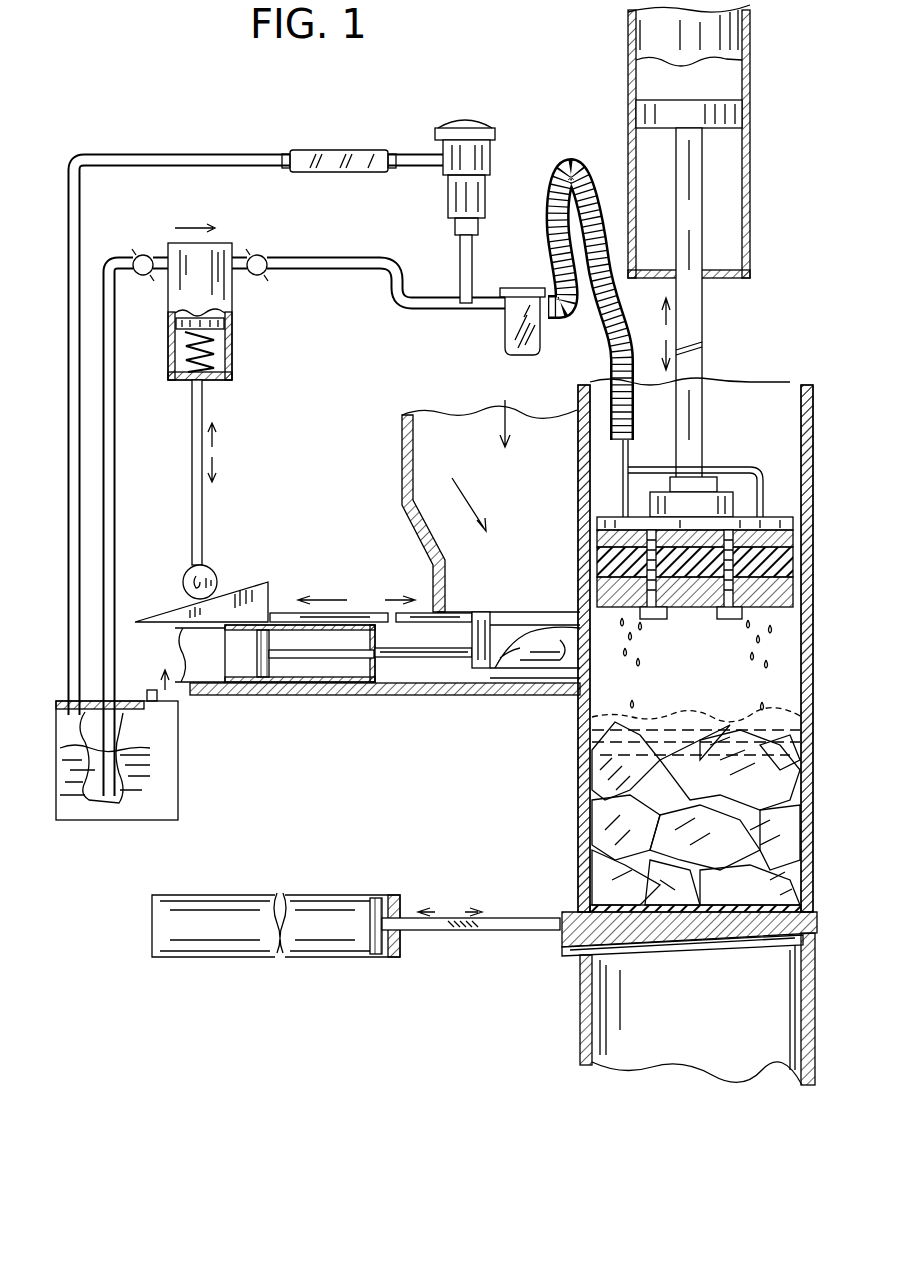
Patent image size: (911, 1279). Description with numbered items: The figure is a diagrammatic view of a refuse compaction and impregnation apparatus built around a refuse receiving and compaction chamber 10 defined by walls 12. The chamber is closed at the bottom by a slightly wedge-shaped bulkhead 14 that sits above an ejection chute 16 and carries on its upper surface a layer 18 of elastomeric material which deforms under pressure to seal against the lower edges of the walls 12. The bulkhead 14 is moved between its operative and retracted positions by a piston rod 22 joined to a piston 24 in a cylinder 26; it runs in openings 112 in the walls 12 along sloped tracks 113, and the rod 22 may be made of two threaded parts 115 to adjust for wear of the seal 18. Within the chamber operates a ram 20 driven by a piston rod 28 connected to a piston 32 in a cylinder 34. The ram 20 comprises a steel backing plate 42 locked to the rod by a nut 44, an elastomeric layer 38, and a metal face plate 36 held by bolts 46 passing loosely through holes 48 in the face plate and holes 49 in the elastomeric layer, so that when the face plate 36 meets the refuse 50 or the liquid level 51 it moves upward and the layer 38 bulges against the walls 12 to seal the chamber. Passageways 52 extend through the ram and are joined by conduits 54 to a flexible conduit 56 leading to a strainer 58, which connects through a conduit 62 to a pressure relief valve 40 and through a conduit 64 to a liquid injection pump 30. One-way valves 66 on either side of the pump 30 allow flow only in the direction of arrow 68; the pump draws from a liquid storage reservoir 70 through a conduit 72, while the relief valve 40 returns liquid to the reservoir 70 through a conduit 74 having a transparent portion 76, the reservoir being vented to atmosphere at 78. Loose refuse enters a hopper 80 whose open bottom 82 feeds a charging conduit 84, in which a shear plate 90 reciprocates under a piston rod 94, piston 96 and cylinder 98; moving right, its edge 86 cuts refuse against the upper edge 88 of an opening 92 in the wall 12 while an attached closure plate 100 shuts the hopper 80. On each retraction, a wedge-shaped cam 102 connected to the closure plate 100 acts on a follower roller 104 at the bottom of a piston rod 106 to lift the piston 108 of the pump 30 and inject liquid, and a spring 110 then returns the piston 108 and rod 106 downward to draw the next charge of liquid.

The refuse receiving and compaction chamber 10 is at (695, 645).
The walls 12 is at (578, 445).
The bulkhead 14 is at (730, 952).
The ejection chute 16 is at (663, 1009).
The layer of elastomeric material 18 is at (592, 905).
The ram 20 is at (661, 565).
The piston rod 22 is at (420, 918).
The piston 24 is at (372, 912).
The cylinder 26 is at (245, 905).
The piston rod 28 is at (702, 342).
The liquid injection pump 30 is at (246, 330).
The piston 32 is at (640, 118).
The cylinder 34 is at (650, 48).
The metal face plate 36 is at (605, 600).
The elastomeric layer 38 is at (600, 570).
The pressure relief valve 40 is at (455, 113).
The steel backing plate 42 is at (597, 525).
The nut 44 is at (692, 480).
The bolts 46 is at (730, 620).
The holes 48 is at (660, 600).
The holes 49 is at (708, 545).
The refuse 50 is at (600, 840).
The liquid level 51 is at (680, 714).
The passageways 52 is at (640, 547).
The conduits 54 is at (623, 498).
The flexible conduit 56 is at (612, 348).
The strainer 58 is at (512, 332).
The conduit 62 is at (473, 272).
The conduit 64 is at (335, 262).
The one-way valves 66 is at (140, 256).
The arrow 68 is at (205, 226).
The liquid storage reservoir 70 is at (190, 788).
The conduit 72 is at (113, 440).
The conduit 74 is at (192, 158).
The transparent portion 76 is at (345, 152).
The vent 78 is at (150, 689).
The hopper 80 is at (489, 506).
The open bottom 82 is at (512, 618).
The charging conduit 84 is at (530, 688).
The edge 86 is at (482, 612).
The upper edge 88 is at (578, 630).
The shear plate 90 is at (470, 636).
The opening 92 is at (575, 690).
The piston rod 94 is at (388, 656).
The piston 96 is at (262, 662).
The cylinder 98 is at (330, 660).
The closure plate 100 is at (378, 606).
The wedge-shaped cam 102 is at (260, 592).
The follower roller 104 is at (186, 574).
The piston rod 106 is at (203, 432).
The piston 108 is at (225, 320).
The spring 110 is at (215, 352).
The openings 112 is at (582, 960).
The sloped tracks 113 is at (690, 946).
The threaded parts 115 is at (460, 932).